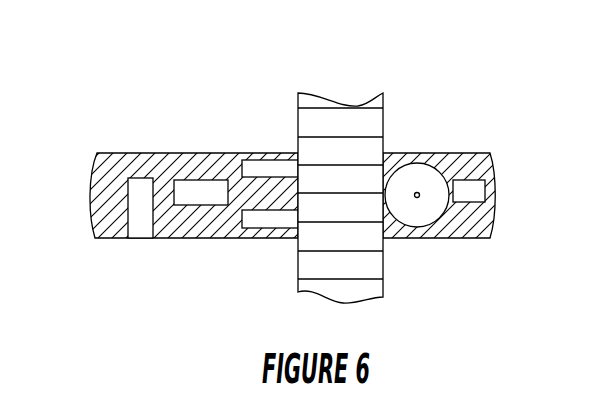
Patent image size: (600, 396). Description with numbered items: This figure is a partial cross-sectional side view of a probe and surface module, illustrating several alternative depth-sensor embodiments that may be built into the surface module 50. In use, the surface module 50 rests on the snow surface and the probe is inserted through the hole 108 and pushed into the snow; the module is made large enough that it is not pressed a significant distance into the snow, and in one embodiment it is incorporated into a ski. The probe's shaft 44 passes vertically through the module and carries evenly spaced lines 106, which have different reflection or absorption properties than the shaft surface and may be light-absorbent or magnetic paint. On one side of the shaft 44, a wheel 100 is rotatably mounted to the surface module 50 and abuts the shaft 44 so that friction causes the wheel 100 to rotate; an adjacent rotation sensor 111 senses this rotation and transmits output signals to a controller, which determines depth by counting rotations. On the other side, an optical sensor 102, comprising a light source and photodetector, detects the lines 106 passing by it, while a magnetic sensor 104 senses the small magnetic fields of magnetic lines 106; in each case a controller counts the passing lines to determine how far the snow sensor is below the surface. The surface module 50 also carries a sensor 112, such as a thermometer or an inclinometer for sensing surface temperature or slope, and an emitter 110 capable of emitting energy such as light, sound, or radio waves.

The shaft 44 is at (383, 107).
The surface module 50 is at (468, 141).
The wheel 100 is at (415, 218).
The optical sensor 102 is at (277, 165).
The magnetic sensor 104 is at (265, 221).
The lines 106 is at (305, 262).
The hole 108 is at (384, 152).
The emitter 110 is at (142, 230).
The rotation sensor 111 is at (469, 192).
The sensor 112 is at (206, 188).